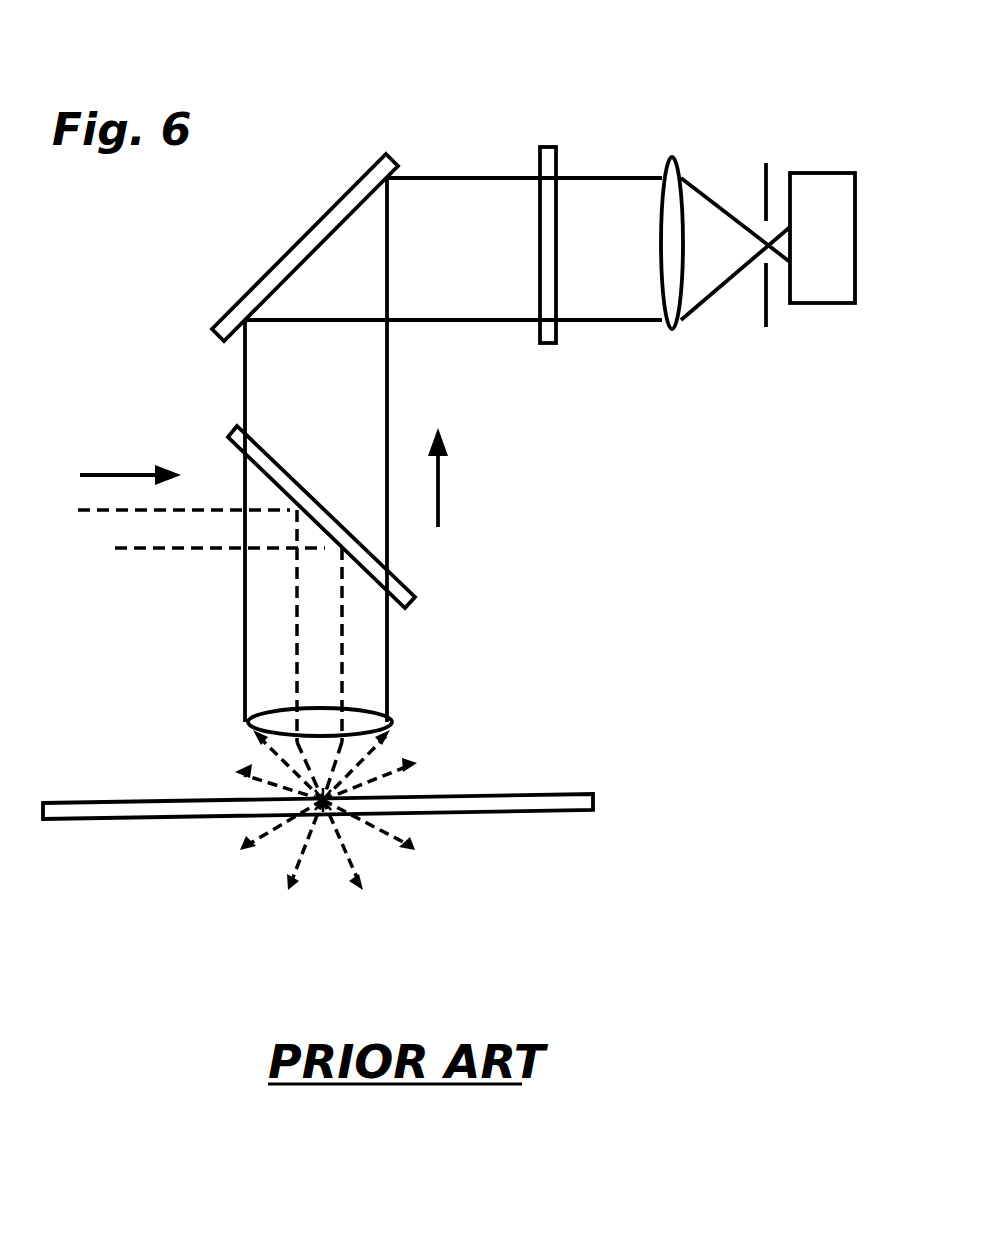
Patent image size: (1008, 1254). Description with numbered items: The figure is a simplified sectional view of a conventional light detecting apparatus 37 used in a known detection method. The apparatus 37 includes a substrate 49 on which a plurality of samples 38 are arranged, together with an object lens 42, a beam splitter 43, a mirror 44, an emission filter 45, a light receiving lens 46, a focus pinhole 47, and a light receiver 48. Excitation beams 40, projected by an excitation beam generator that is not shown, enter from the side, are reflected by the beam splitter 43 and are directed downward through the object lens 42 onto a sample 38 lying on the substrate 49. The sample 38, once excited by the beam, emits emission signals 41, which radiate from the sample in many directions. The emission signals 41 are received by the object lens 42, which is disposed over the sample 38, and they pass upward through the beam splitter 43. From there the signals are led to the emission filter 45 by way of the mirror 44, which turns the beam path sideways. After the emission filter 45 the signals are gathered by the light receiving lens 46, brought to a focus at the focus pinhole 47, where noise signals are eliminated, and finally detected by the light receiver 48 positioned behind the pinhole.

The light detecting apparatus 37 is at (443, 994).
The sample 38 is at (320, 797).
The excitation beams 40 is at (235, 614).
The emission signals 41 is at (350, 810).
The object lens 42 is at (347, 723).
The beam splitter 43 is at (353, 529).
The mirror 44 is at (305, 247).
The emission filter 45 is at (554, 267).
The light receiving lens 46 is at (723, 271).
The focus pinhole 47 is at (770, 274).
The light receiver 48 is at (852, 238).
The substrate 49 is at (347, 801).